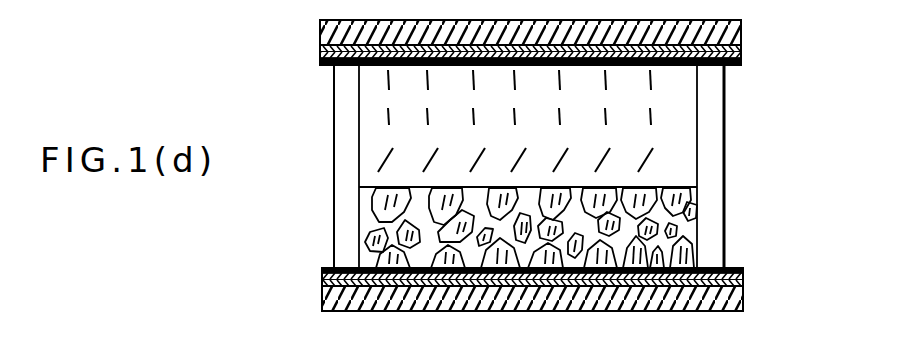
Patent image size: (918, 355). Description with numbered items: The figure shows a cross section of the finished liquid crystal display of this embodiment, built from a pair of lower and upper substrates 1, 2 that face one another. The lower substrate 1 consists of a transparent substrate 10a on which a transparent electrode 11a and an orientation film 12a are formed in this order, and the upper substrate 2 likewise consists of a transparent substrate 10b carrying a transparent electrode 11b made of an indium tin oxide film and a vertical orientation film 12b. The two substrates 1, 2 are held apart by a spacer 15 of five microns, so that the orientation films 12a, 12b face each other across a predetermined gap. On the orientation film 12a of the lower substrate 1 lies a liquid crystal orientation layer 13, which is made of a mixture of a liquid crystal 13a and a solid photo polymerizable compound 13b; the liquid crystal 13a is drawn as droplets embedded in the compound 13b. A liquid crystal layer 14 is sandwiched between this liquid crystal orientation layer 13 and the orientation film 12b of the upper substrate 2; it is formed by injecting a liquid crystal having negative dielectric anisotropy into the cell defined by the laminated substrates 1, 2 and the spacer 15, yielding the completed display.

The substrate 1 is at (598, 295).
The substrate 2 is at (597, 57).
The transparent substrate 10a is at (579, 313).
The transparent substrate 10b is at (741, 32).
The transparent electrode 11a is at (744, 288).
The transparent electrode 11b is at (742, 50).
The orientation film 12a is at (744, 276).
The orientation film 12b is at (742, 62).
The liquid crystal orientation layer 13 is at (619, 215).
The liquid crystal 13a is at (698, 194).
The photo polymerizable compound 13b is at (690, 231).
The liquid crystal layer 14 is at (668, 129).
The spacer 15 is at (345, 151).